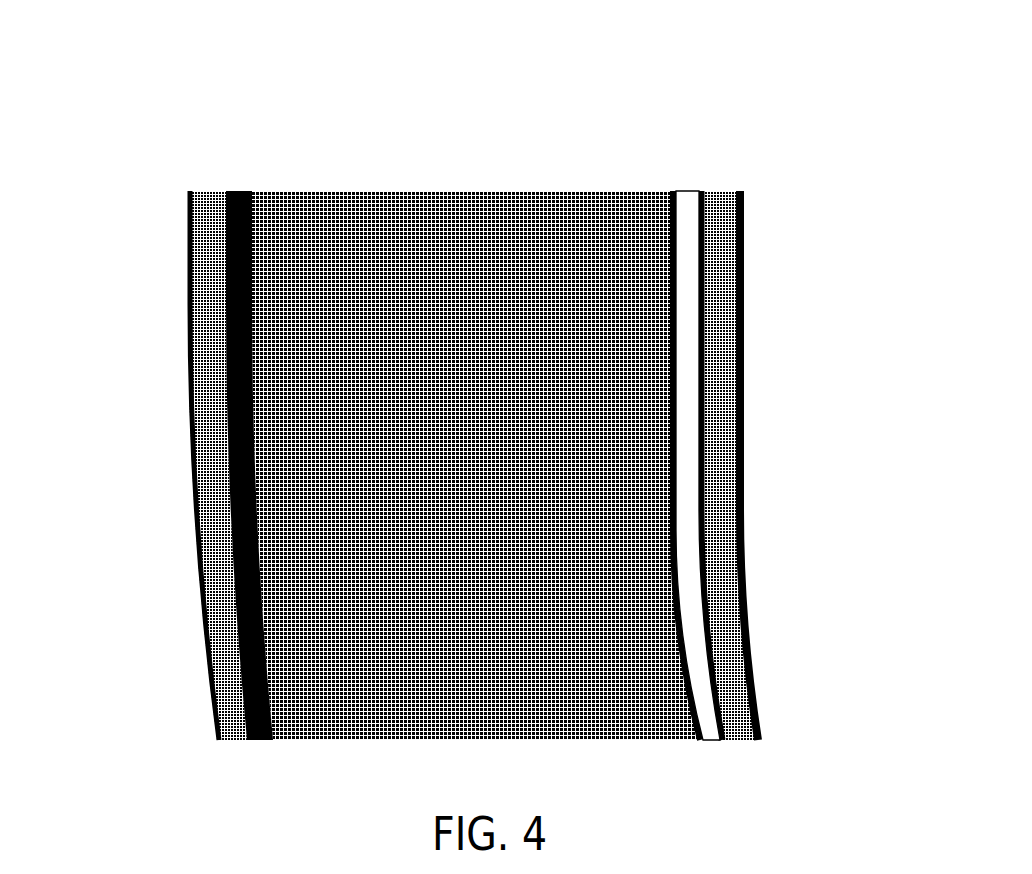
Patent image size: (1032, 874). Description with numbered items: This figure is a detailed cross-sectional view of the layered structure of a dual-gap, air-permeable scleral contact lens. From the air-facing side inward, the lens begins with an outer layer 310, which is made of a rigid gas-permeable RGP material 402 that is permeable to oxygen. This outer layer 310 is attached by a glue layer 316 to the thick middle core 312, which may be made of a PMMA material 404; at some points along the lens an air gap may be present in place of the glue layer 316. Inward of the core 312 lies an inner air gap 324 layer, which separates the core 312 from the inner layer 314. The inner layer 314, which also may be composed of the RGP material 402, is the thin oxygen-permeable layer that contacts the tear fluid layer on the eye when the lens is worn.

The outer layer 310 is at (213, 415).
The core 312 is at (477, 465).
The inner layer 314 is at (728, 435).
The glue layer 316 is at (241, 192).
The inner air gap 324 is at (690, 205).
The RGP material 402 is at (473, 416).
The PMMA material 404 is at (477, 414).